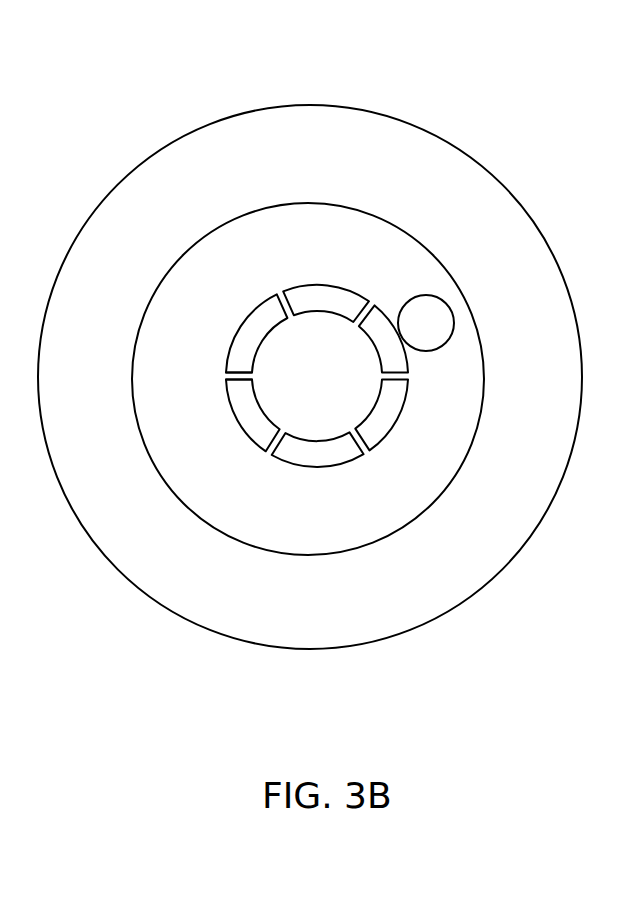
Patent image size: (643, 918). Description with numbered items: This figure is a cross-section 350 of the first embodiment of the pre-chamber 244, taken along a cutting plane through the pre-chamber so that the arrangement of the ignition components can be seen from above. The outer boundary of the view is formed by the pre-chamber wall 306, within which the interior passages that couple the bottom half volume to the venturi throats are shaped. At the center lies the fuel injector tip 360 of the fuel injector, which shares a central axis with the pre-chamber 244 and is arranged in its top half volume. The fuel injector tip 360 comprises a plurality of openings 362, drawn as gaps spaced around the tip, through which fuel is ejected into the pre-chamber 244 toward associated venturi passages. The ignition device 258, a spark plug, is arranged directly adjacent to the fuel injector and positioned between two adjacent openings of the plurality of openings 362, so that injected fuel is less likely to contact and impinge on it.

The cross-section 350 is at (553, 73).
The pre-chamber 244 is at (523, 208).
The pre-chamber wall 306 is at (345, 379).
The fuel injector tip 360 is at (318, 284).
The plurality of openings 362 is at (225, 368).
The ignition device 258 is at (426, 323).